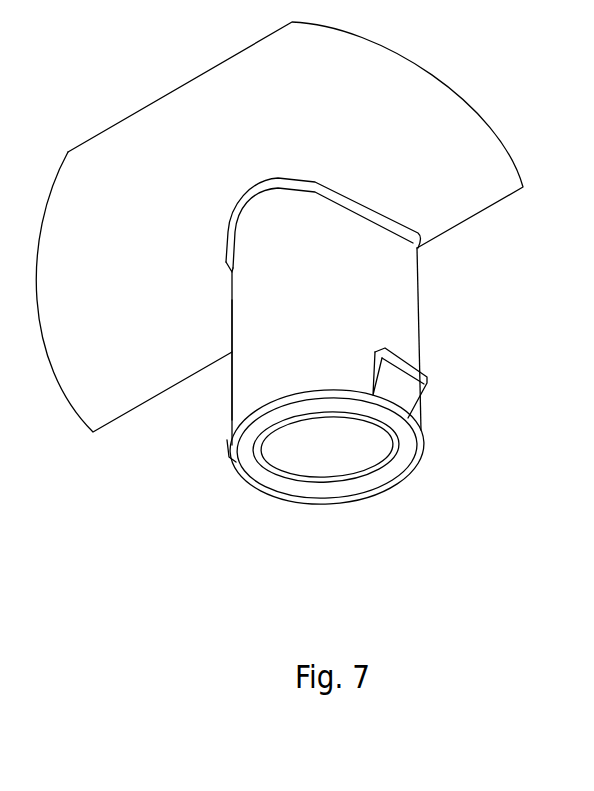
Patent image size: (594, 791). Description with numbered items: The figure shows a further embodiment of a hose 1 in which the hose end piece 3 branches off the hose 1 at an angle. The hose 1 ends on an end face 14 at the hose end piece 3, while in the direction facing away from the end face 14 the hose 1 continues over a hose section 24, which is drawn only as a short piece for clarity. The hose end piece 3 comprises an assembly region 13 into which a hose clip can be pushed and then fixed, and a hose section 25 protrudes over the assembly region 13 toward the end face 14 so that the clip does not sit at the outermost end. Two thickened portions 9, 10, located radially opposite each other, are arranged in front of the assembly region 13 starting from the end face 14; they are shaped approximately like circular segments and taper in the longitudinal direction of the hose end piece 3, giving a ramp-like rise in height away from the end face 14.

The hose 1 is at (192, 98).
The hose end piece 3 is at (408, 310).
The hose section 24 is at (408, 270).
The hose section 25 is at (248, 405).
The thickened portion 9 is at (410, 390).
The assembly region 13 is at (408, 350).
The end face 14 is at (382, 485).
The thickened portion 10 is at (227, 445).